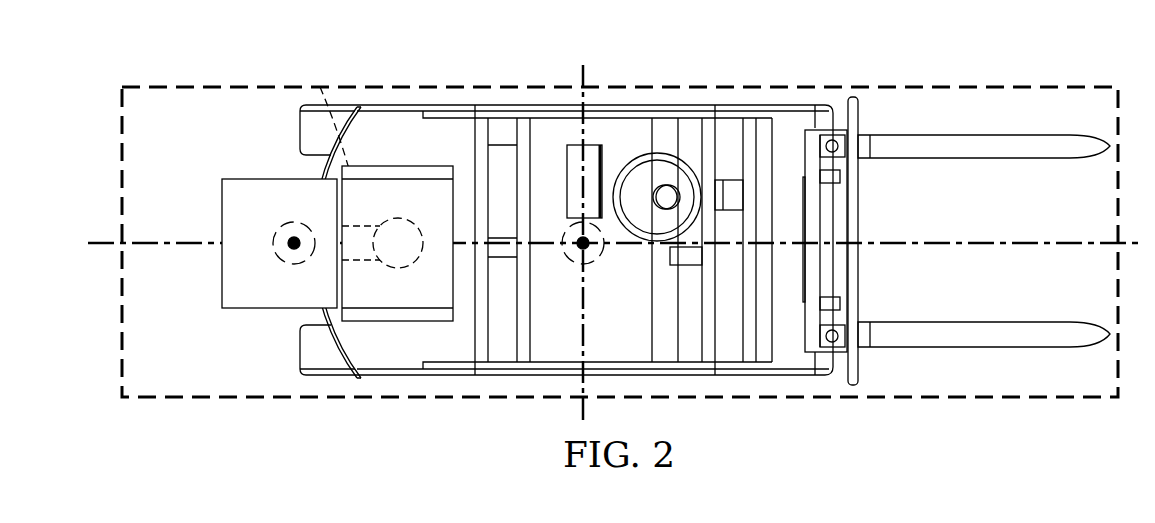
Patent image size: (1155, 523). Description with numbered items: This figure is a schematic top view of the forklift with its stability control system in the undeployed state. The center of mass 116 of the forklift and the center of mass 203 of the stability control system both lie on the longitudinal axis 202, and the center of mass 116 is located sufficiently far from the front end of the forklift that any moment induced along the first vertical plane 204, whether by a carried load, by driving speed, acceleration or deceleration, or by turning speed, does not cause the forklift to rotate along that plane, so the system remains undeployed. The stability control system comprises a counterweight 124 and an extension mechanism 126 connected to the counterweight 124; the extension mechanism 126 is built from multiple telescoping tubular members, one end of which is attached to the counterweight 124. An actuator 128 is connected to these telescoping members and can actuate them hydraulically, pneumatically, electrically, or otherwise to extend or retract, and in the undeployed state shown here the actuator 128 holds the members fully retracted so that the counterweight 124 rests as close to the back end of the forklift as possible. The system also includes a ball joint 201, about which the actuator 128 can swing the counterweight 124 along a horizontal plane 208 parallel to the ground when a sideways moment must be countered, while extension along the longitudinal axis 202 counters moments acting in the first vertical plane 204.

The center of mass 116 is at (577, 265).
The counterweight 124 is at (276, 179).
The extension mechanism 126 is at (330, 110).
The actuator 128 is at (403, 268).
The ball joint 201 is at (391, 218).
The longitudinal axis 202 is at (197, 243).
The center of mass of the stability control system 203 is at (287, 262).
The first vertical plane 204 is at (164, 246).
The horizontal plane 208 is at (586, 80).